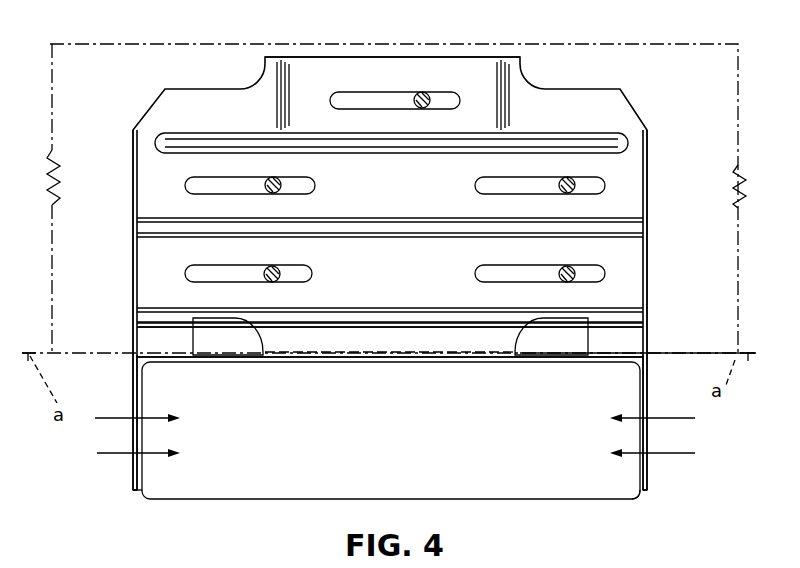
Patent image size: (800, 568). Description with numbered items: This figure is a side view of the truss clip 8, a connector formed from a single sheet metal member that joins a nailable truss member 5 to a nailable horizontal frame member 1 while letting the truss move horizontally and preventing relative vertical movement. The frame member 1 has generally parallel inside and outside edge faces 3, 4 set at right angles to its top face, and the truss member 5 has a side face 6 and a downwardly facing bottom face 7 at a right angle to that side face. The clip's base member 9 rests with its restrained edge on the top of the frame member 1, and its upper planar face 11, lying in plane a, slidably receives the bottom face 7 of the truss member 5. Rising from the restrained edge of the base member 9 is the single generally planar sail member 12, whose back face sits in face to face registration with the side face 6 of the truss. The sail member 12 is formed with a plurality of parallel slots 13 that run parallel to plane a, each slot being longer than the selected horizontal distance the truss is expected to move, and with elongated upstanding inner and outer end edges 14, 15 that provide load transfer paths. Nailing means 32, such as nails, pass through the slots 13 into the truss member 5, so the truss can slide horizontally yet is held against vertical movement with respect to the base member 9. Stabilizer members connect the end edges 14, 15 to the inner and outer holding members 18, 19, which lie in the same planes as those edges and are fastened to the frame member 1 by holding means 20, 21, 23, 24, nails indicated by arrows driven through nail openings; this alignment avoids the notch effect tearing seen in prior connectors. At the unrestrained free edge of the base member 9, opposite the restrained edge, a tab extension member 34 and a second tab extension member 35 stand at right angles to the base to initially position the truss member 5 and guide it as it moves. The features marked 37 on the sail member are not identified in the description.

The horizontal frame member 1 is at (213, 505).
The inside edge face 3 is at (140, 490).
The outside edge face 4 is at (645, 495).
The truss member 5 is at (686, 20).
The side face 6 is at (600, 520).
The bottom face 7 is at (680, 352).
The truss clip 8 is at (255, 58).
The base member 9 is at (408, 358).
The upper planar face 11 is at (300, 352).
The sail member 12 is at (500, 57).
The slots 13 is at (223, 186).
The inner end edge 14 is at (133, 158).
The outer end edge 15 is at (647, 165).
The inner holding member 18 is at (133, 387).
The outer holding member 19 is at (649, 408).
The holding means 20 is at (690, 418).
The holding means 21 is at (680, 453).
The holding means 23 is at (105, 418).
The holding means 24 is at (122, 455).
The nailing means 32 is at (278, 182).
The tab extension member 34 is at (228, 342).
The second tab extension member 35 is at (548, 342).
The bend lines 37 is at (583, 142).